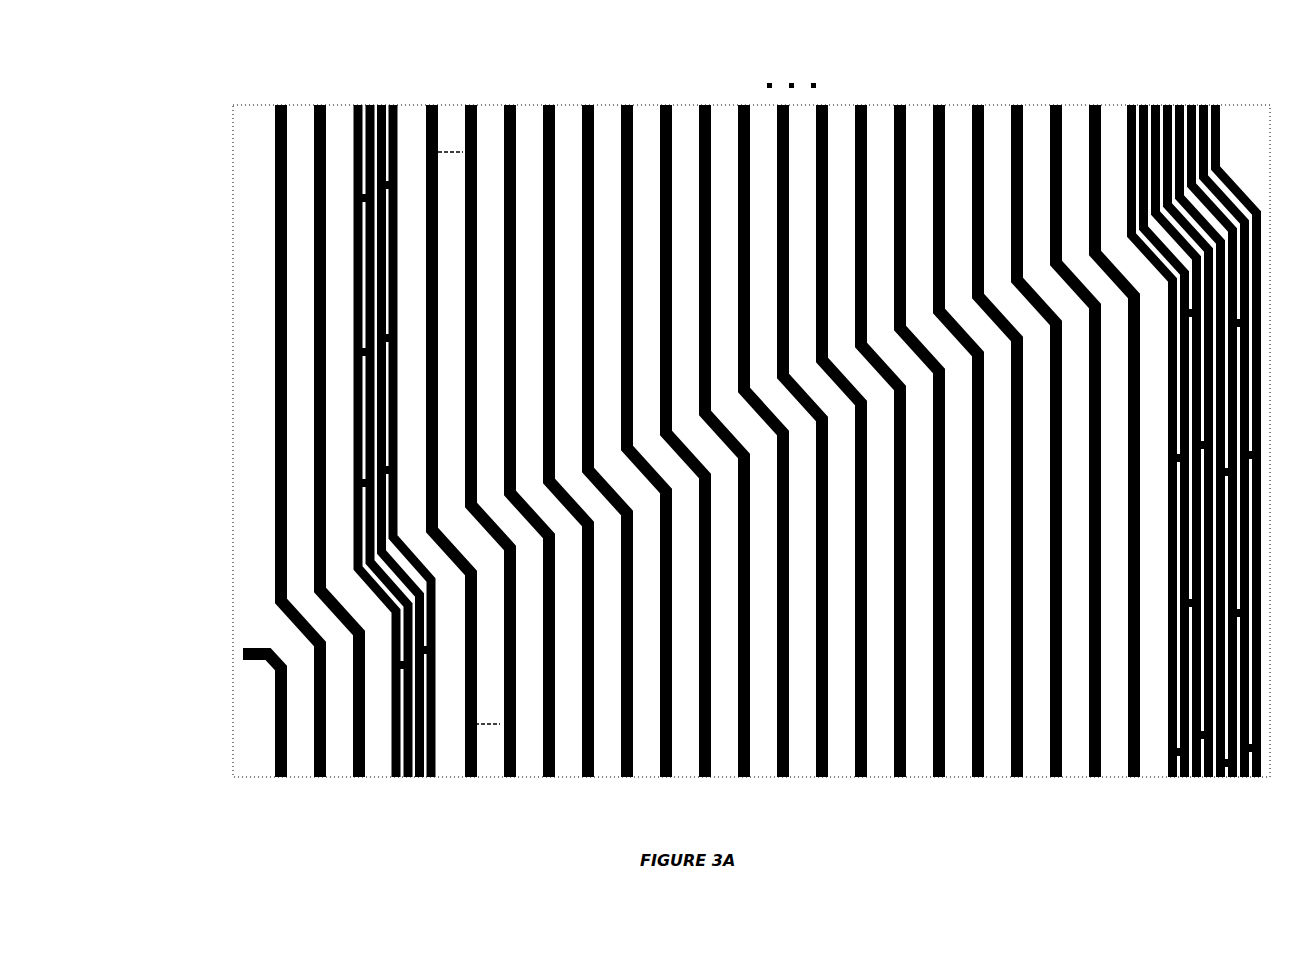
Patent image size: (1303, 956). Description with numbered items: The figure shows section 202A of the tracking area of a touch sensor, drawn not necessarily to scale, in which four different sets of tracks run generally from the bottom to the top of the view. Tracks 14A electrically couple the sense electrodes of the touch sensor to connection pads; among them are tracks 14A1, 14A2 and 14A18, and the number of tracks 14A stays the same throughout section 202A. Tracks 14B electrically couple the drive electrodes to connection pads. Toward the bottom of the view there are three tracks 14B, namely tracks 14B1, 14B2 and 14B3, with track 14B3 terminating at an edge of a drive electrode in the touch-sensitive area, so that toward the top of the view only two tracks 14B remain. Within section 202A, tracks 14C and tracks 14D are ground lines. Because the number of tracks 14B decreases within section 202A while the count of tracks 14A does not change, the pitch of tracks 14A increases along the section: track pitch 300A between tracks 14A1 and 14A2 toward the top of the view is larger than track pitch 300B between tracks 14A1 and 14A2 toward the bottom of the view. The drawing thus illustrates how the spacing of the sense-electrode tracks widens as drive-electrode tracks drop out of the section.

The section of tracking area 202A is at (223, 103).
The tracks 14A is at (783, 421).
The track 14A1 is at (429, 94).
The track 14A2 is at (473, 94).
The track 14A18 is at (1096, 94).
The tracks 14B is at (269, 460).
The track 14B1 is at (304, 349).
The track 14B2 is at (264, 446).
The track 14B3 is at (264, 705).
The tracks 14C is at (450, 780).
The tracks 14D is at (1260, 780).
The track pitch 300A is at (454, 143).
The track pitch 300B is at (491, 736).